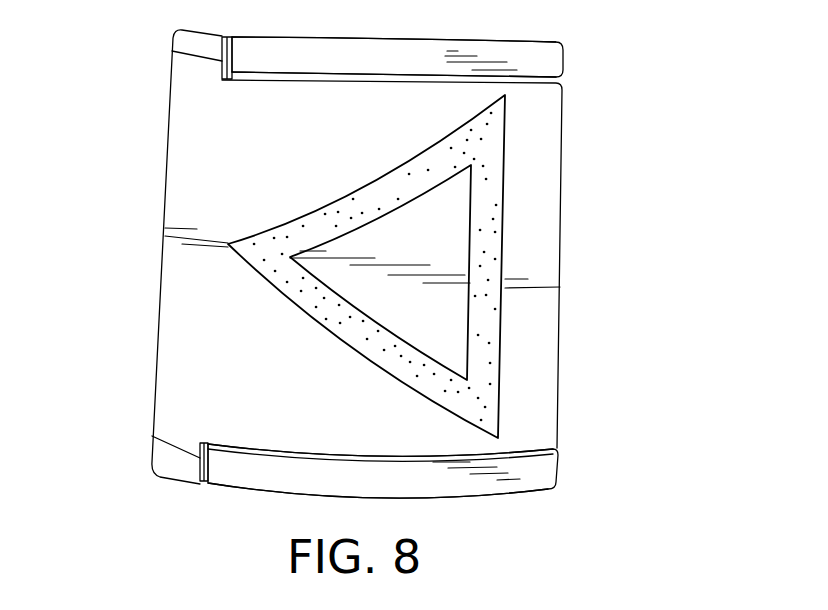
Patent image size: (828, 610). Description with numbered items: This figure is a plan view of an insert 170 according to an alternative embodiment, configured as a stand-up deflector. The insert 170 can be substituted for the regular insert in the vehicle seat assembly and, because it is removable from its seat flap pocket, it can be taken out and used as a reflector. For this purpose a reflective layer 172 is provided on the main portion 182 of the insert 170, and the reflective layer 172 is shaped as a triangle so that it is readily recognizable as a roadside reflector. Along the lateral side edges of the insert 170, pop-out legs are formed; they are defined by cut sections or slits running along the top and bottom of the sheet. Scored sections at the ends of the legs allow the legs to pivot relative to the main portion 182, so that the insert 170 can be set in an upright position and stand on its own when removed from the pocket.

The insert 170 is at (527, 502).
The reflective layer 172 is at (490, 233).
The main portion 182 is at (537, 350).